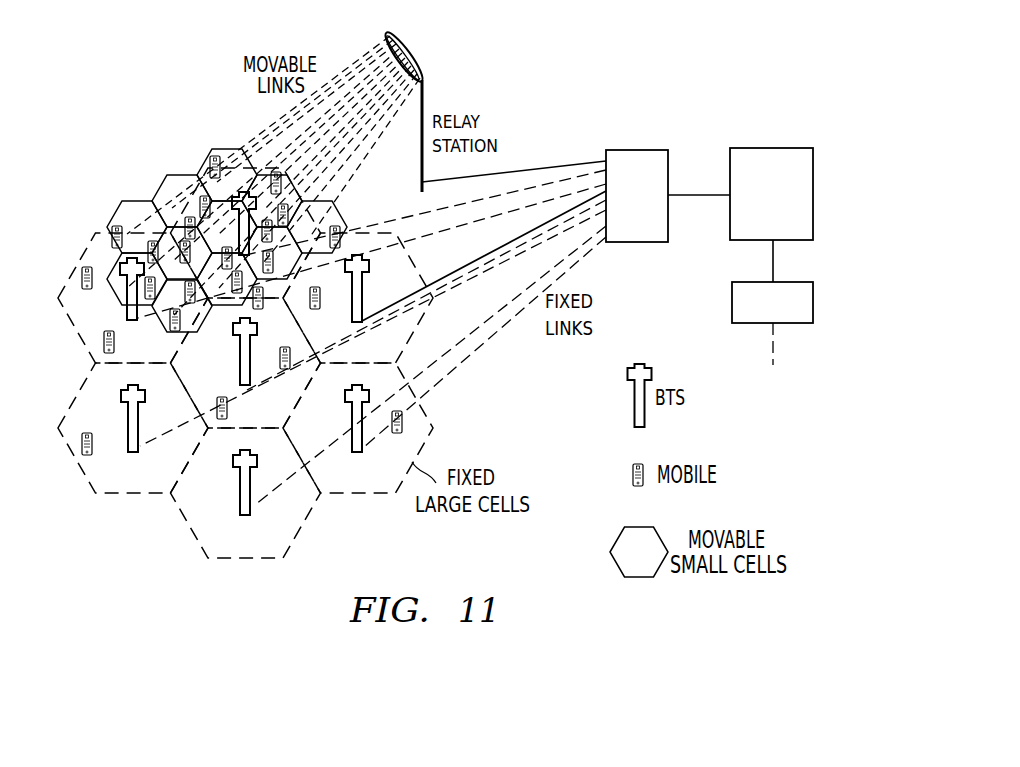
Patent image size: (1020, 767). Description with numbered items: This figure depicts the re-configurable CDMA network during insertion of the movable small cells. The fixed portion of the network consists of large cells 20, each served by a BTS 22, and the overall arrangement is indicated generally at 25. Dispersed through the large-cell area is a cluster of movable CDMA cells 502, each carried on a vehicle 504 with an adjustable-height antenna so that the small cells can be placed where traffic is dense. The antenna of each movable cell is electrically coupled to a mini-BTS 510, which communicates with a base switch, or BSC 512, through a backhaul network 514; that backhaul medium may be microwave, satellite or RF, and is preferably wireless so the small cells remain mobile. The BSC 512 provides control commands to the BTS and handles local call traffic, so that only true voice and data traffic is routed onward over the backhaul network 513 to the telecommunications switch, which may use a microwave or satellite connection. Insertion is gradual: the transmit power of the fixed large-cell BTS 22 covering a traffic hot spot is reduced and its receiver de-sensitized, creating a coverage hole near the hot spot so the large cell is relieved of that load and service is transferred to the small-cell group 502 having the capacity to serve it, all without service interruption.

The large cells 20 is at (232, 559).
The BTS 22 is at (127, 410).
The cellular network 25 is at (157, 546).
The movable CDMA cells 502 is at (103, 344).
The vehicle 504 is at (211, 150).
The mini-BTS 510 is at (773, 148).
The base switch (BSC) 512 is at (637, 150).
The backhaul network 513 is at (690, 194).
The backhaul network 514 is at (424, 98).